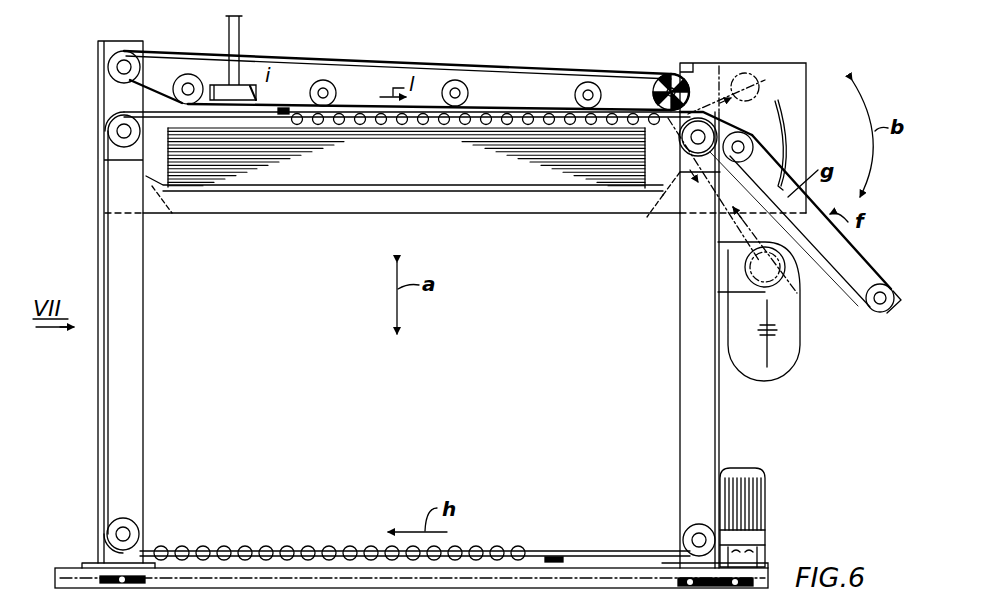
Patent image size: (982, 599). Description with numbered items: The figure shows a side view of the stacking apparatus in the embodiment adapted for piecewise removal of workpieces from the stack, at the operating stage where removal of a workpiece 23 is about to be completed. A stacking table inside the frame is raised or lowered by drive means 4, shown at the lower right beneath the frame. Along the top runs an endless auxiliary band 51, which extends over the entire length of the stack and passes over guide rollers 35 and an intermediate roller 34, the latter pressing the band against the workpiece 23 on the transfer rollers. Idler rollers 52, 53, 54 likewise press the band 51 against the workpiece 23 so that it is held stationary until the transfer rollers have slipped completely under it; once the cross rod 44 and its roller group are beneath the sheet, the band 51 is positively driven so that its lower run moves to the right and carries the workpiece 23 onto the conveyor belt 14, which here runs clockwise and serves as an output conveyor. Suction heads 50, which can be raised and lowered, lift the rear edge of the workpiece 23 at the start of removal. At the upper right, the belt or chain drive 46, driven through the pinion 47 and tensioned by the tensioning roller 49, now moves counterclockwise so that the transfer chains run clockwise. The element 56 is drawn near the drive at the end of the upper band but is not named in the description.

The drive means 4 is at (757, 538).
The conveyor belt 14 is at (860, 257).
The workpiece 23 is at (437, 107).
The intermediate roller 34 is at (184, 75).
The guide roller 35 is at (112, 68).
The cross rod 44 is at (283, 116).
The belt or chain drive 46 is at (701, 71).
The pinion 47 is at (777, 280).
The tensioning roller 49 is at (752, 82).
The suction head 50 is at (247, 45).
The auxiliary band 51 is at (317, 58).
The idler roller 52 is at (336, 91).
The idler roller 53 is at (468, 91).
The idler roller 54 is at (575, 93).
The feed roller 56 is at (663, 76).